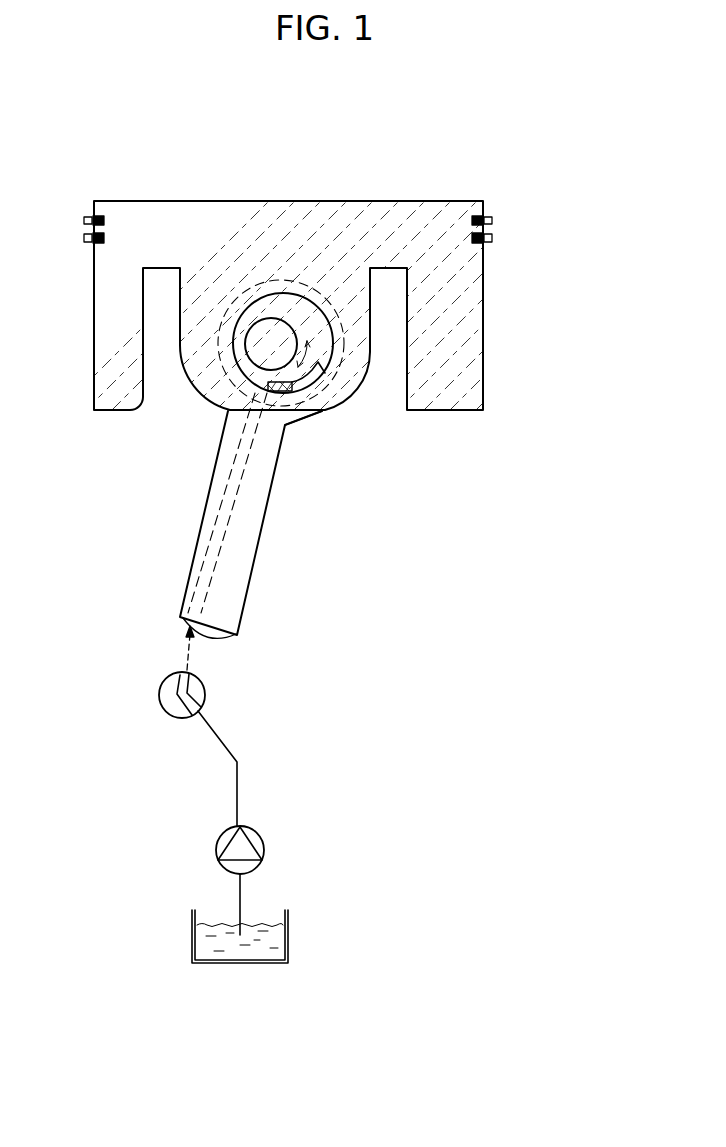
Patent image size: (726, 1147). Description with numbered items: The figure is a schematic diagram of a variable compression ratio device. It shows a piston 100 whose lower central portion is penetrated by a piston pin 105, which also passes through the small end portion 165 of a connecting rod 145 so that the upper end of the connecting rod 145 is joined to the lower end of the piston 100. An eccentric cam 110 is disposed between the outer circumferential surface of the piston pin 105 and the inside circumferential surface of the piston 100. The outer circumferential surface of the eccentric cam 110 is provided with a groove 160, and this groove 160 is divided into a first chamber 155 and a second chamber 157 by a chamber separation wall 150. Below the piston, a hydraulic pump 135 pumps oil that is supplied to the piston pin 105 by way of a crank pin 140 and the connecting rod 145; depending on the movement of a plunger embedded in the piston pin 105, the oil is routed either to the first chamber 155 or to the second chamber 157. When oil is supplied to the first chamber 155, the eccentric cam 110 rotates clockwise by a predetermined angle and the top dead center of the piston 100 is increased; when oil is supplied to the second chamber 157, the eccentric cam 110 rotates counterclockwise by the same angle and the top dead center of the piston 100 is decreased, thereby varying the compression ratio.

The piston 100 is at (94, 325).
The piston pin 105 is at (250, 300).
The eccentric cam 110 is at (274, 318).
The hydraulic pump 135 is at (216, 850).
The crank pin 140 is at (159, 697).
The connecting rod 145 is at (186, 595).
The chamber separation wall 150 is at (287, 428).
The first chamber 155 is at (226, 428).
The second chamber 157 is at (318, 368).
The groove 160 is at (313, 378).
The small end portion 165 is at (232, 303).